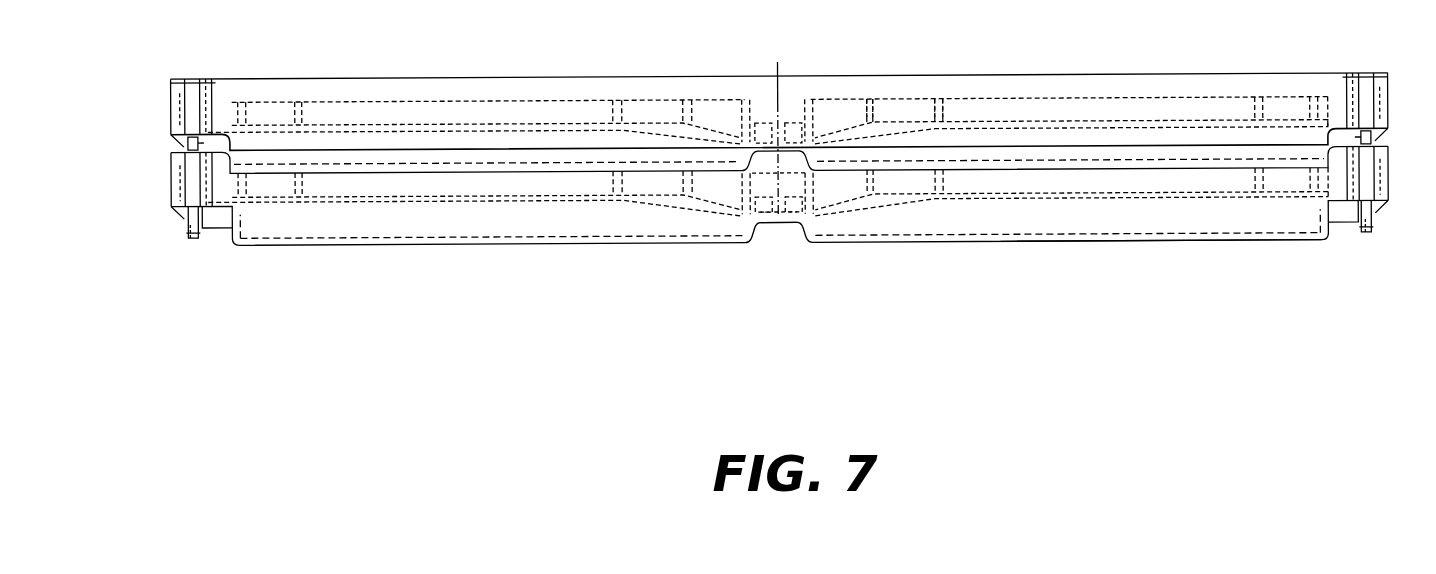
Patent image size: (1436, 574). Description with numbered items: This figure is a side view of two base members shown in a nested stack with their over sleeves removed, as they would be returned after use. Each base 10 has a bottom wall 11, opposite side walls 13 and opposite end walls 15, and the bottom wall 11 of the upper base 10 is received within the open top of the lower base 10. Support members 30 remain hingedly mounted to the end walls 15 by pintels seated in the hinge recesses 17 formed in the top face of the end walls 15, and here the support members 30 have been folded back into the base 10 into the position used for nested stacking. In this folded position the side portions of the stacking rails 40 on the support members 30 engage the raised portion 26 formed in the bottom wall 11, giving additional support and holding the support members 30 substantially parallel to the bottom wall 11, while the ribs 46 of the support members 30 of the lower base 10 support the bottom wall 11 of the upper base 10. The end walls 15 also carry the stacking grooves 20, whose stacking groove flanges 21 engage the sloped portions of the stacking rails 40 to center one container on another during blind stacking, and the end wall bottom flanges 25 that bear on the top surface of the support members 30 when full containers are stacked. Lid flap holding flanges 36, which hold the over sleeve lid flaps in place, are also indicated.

The base 10 is at (1160, 222).
The bottom wall 11 is at (512, 247).
The side walls 13 is at (650, 83).
The end walls 15 is at (171, 108).
The hinge recesses 17 is at (204, 62).
The stacking grooves 20 is at (220, 258).
The stacking groove flanges 21 is at (206, 224).
The end wall bottom flanges 25 is at (186, 233).
The raised portion 26 is at (783, 235).
The support members 30 is at (373, 110).
The lid flap holding flanges 36 is at (812, 217).
The stacking rails 40 is at (797, 125).
The ribs 46 is at (887, 98).